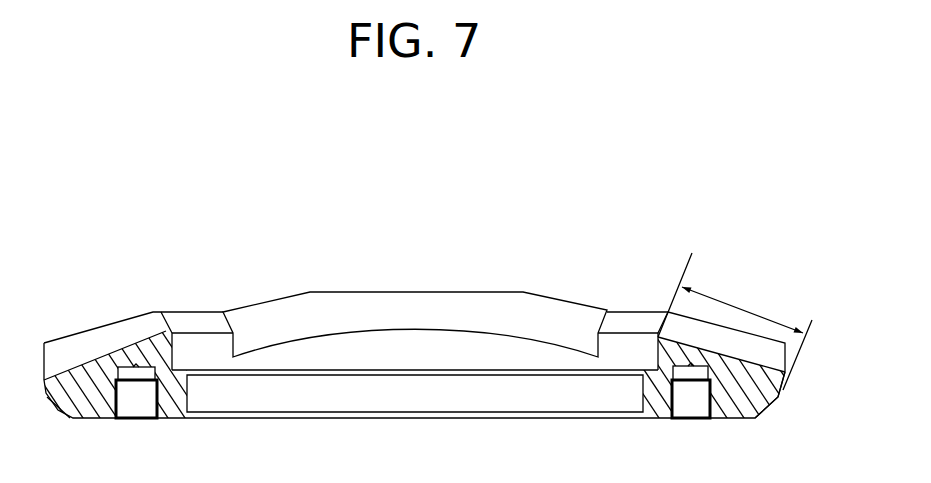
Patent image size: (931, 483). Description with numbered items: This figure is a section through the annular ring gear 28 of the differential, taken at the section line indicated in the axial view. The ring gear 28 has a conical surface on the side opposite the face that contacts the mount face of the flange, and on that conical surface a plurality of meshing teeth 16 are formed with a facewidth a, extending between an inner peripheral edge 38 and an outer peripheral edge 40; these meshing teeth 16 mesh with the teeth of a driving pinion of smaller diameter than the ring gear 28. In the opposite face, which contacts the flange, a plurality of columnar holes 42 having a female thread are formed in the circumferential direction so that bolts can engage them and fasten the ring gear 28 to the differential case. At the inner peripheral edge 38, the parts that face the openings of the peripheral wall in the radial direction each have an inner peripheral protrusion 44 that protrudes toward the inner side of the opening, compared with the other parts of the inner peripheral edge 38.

The ring gear 28 is at (176, 181).
The meshing teeth 16 is at (83, 342).
The inner peripheral edge 38 is at (167, 344).
The inner peripheral protrusion 44 is at (495, 272).
The columnar holes 42 is at (125, 402).
The outer peripheral edge 40 is at (780, 390).
The facewidth a is at (728, 295).